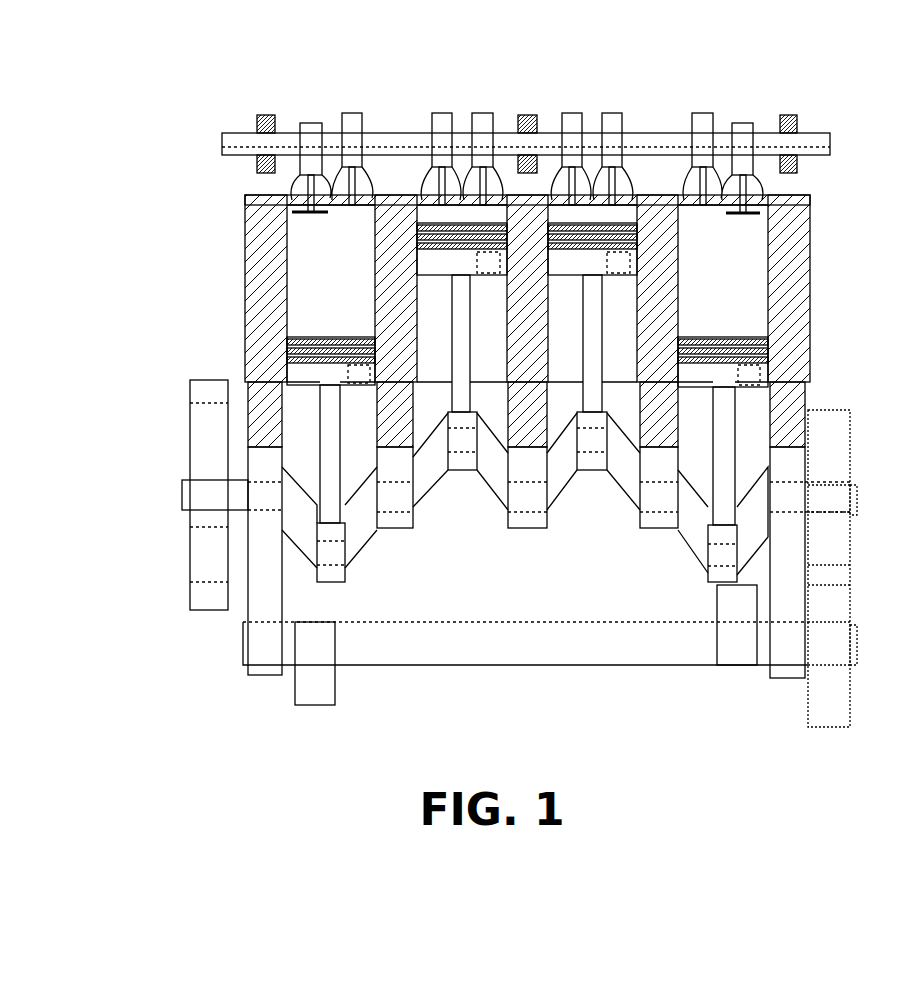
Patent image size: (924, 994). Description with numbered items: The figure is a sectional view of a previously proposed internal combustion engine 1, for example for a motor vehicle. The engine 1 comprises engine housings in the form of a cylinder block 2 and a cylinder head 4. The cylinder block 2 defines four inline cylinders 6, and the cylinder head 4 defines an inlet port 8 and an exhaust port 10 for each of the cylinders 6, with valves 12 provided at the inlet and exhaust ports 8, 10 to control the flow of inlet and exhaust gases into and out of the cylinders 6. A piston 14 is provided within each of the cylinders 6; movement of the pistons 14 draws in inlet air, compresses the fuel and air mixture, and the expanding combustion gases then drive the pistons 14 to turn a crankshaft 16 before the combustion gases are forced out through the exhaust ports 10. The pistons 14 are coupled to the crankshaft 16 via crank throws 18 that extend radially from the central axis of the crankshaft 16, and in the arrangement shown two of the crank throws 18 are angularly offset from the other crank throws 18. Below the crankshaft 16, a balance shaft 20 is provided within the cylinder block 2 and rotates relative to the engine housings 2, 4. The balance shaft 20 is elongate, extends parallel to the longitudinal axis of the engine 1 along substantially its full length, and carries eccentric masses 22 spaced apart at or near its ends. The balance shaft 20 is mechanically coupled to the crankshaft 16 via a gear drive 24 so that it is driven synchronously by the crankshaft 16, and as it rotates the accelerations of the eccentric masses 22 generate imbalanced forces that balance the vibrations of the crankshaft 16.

The engine 1 is at (214, 118).
The cylinder block 2 is at (243, 363).
The cylinder head 4 is at (243, 201).
The cylinder 6 is at (324, 278).
The inlet port 8 is at (300, 200).
The exhaust port 10 is at (388, 155).
The valve 12 is at (345, 166).
The piston 14 is at (331, 338).
The crankshaft 16 is at (190, 500).
The crank throw 18 is at (370, 548).
The balance shaft 20 is at (558, 668).
The eccentric mass 22 is at (323, 680).
The gear drive 24 is at (847, 577).